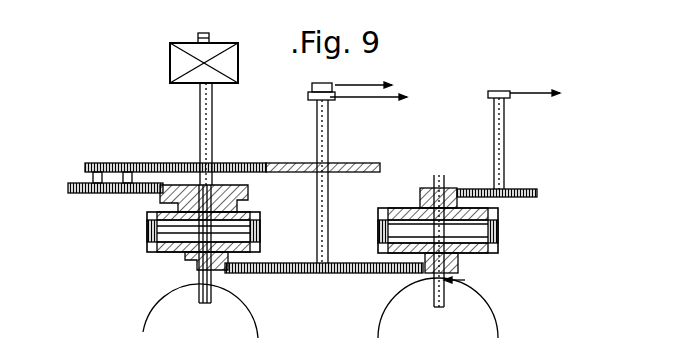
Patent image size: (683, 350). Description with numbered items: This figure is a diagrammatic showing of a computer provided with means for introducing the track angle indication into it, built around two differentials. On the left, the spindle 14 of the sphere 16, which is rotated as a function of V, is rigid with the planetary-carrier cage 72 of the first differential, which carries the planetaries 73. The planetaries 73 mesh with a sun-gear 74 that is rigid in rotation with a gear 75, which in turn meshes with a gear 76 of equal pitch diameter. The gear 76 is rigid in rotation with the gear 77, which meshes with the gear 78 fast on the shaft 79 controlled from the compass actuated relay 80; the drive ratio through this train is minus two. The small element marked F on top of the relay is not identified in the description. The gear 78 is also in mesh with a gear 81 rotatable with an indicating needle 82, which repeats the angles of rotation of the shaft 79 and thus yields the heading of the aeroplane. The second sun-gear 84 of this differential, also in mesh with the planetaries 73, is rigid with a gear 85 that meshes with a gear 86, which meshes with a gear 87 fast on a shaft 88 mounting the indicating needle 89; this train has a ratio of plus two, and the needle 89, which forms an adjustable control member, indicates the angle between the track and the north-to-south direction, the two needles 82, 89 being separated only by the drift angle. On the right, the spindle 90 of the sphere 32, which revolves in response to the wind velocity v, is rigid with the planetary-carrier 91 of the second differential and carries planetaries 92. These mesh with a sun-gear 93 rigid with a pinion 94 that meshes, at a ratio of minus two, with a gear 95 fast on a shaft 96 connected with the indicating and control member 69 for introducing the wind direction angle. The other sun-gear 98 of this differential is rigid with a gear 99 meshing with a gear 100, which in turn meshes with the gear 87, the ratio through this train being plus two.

The compass actuated relay 80 is at (176, 63).
The force indicator F is at (210, 39).
The shaft 79 is at (213, 121).
The gear 77 is at (90, 163).
The gear 78 is at (228, 163).
The gear 76 is at (70, 186).
The gear 75 is at (244, 191).
The sun-gear 74 is at (250, 210).
The planetaries 73 is at (148, 236).
The planetary-carrier cage 72 is at (148, 223).
The second sun-gear 84 is at (160, 251).
The spindle 14 is at (198, 277).
The velocity V is at (163, 312).
The sphere 16 is at (258, 332).
The gear 85 is at (222, 266).
The gear 86 is at (256, 275).
The gear 87 is at (322, 275).
The gear 100 is at (378, 273).
The gear 81 is at (330, 163).
The shaft 88 is at (328, 217).
The indicating needle 89 is at (355, 82).
The indicating needle 82 is at (400, 97).
The shaft 96 is at (500, 149).
The indicating and control member 69 is at (500, 93).
The gear 95 is at (522, 190).
The pinion 94 is at (441, 186).
The sun-gear 93 is at (498, 215).
The planetary-carrier 91 is at (498, 229).
The planetaries 92 is at (498, 246).
The sun-gear 98 is at (475, 253).
The spindle 90 is at (467, 282).
The gear 99 is at (425, 268).
The wind velocity v is at (480, 312).
The sphere 32 is at (497, 326).